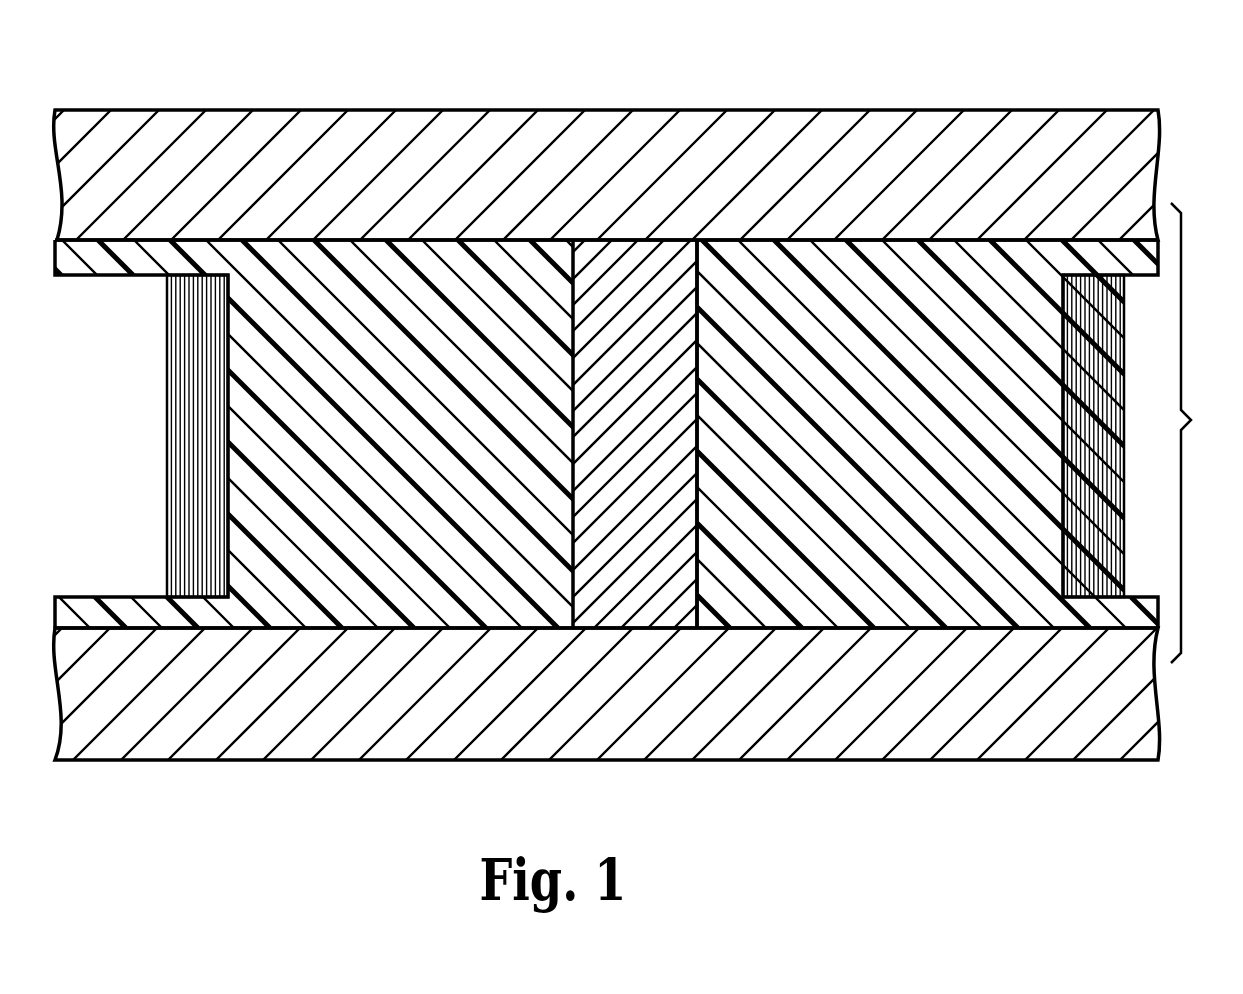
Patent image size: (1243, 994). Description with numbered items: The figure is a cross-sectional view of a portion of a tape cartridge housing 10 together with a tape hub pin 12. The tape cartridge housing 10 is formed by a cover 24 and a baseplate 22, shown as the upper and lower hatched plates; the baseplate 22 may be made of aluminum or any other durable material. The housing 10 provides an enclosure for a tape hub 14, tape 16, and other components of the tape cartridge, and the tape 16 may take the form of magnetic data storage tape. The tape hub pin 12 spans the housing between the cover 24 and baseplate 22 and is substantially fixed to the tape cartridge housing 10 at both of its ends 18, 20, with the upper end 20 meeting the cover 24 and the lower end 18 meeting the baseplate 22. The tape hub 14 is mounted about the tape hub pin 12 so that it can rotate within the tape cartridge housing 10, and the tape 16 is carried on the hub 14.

The tape cartridge housing 10 is at (1199, 433).
The tape hub pin 12 is at (673, 297).
The tape hub 14 is at (868, 280).
The tape 16 is at (193, 417).
The end 18 is at (647, 630).
The end 20 is at (605, 240).
The baseplate 22 is at (290, 710).
The cover 24 is at (178, 140).